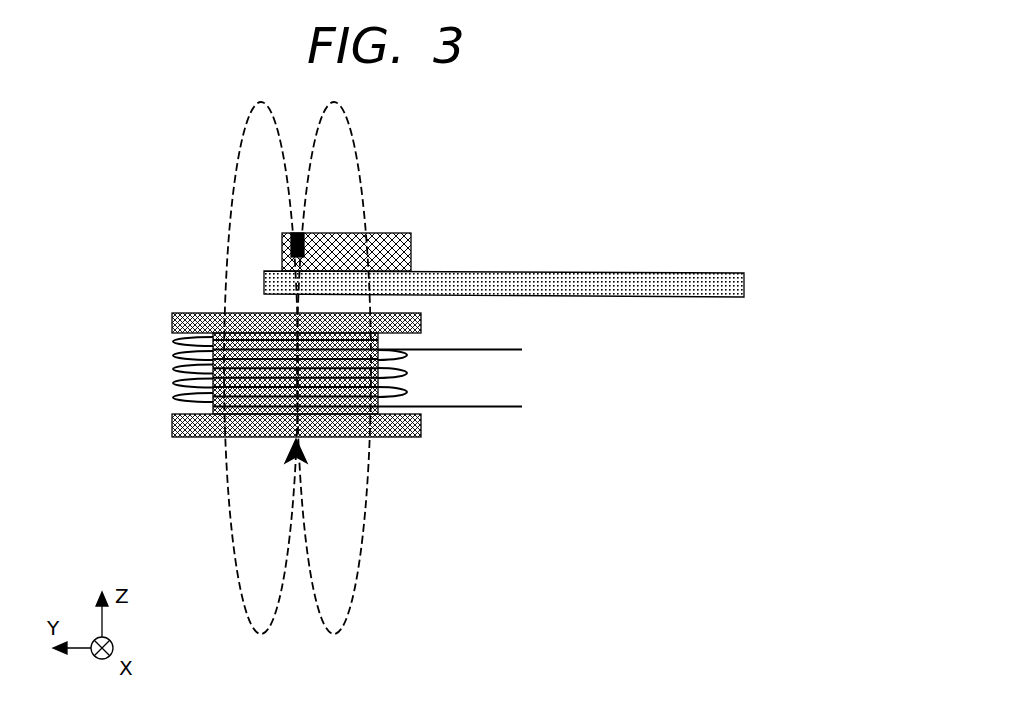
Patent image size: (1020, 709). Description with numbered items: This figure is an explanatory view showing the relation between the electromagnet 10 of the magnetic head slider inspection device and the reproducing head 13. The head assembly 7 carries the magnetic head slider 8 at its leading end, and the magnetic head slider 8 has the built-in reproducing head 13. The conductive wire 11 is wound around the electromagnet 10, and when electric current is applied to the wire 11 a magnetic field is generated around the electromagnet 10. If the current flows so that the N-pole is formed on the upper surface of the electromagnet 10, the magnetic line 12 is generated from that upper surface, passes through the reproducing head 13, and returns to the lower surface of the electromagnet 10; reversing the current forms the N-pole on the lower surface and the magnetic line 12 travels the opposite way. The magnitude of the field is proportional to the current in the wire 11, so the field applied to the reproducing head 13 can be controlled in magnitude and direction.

The head assembly 7 is at (571, 290).
The magnetic head slider 8 is at (393, 238).
The electromagnet 10 is at (185, 318).
The conductive wire 11 is at (470, 409).
The magnetic line 12 is at (358, 562).
The reproducing head 13 is at (283, 242).